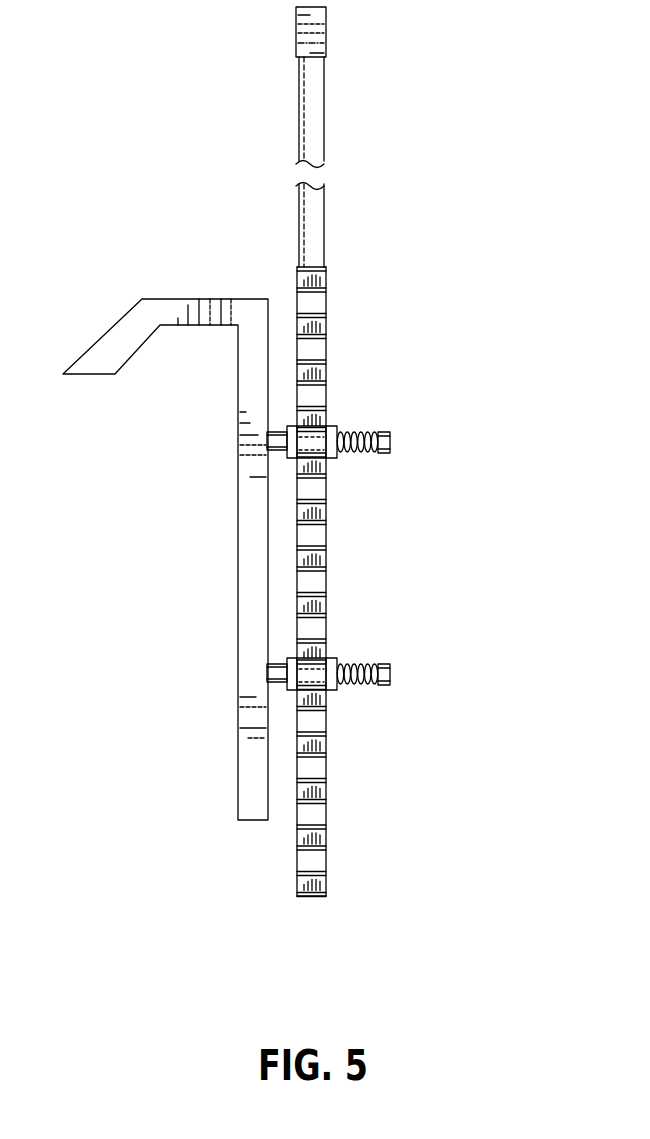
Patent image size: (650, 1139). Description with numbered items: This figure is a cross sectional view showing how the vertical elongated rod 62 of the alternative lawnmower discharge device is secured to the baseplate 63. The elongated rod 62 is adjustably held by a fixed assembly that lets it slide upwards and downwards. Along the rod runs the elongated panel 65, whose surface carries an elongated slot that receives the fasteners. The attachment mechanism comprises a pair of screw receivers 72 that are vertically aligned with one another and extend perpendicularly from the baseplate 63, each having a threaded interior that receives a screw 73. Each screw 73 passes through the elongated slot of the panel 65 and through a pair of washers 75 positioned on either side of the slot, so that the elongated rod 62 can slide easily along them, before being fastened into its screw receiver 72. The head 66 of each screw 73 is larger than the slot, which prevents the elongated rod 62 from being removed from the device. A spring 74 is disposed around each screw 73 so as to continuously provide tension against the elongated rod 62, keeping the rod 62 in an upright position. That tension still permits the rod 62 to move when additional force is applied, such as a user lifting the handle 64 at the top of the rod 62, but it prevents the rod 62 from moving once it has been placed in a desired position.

The elongated rod 62 is at (317, 70).
The baseplate 63 is at (252, 312).
The handle 64 is at (305, 27).
The elongated panel 65 is at (317, 303).
The head 66 is at (390, 443).
The screw receiver 72 is at (278, 686).
The screw 73 is at (320, 652).
The spring 74 is at (355, 667).
The washer 75 is at (331, 459).